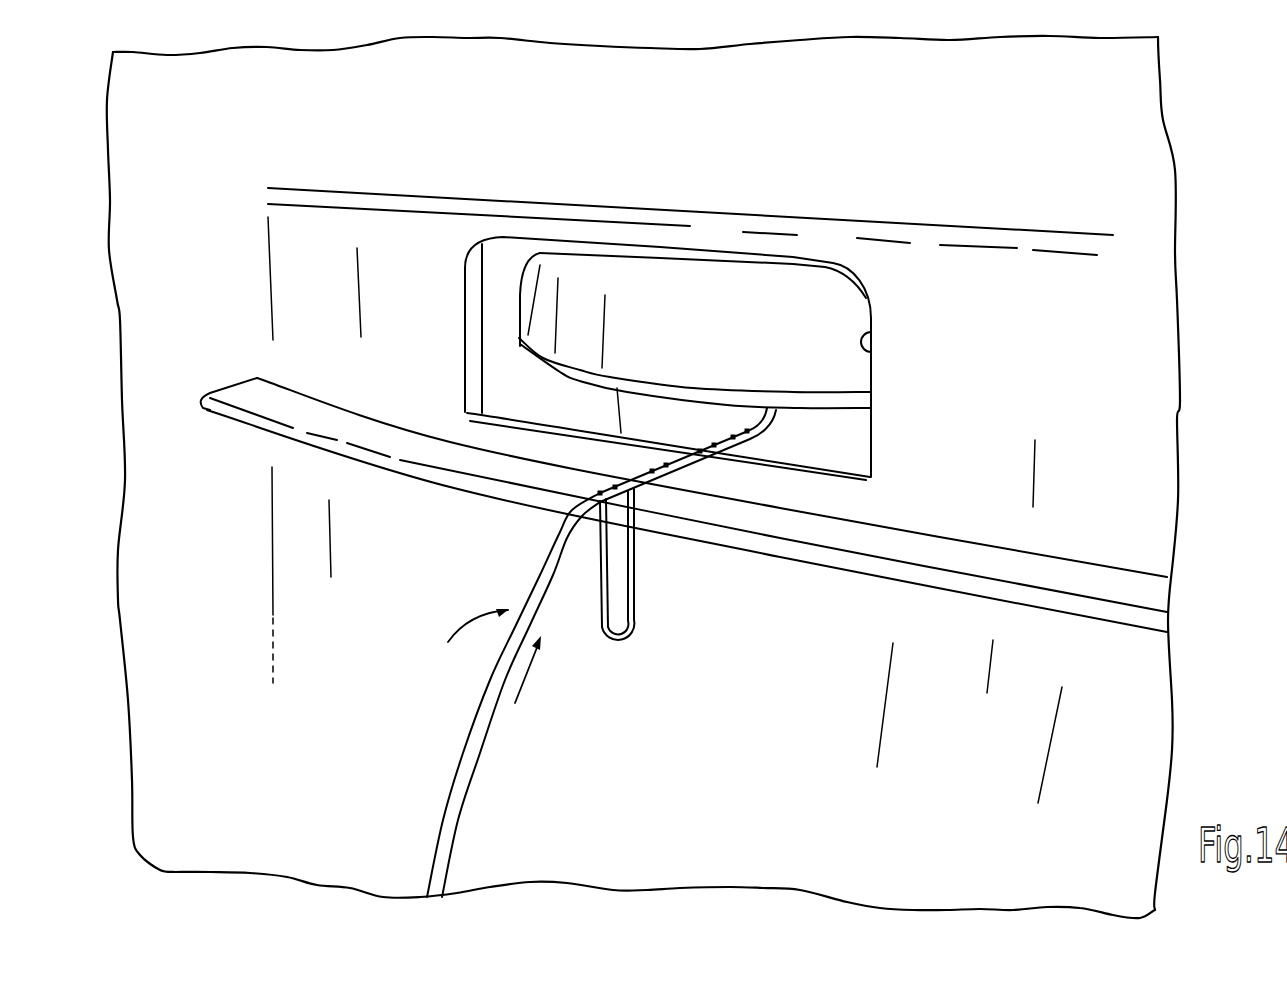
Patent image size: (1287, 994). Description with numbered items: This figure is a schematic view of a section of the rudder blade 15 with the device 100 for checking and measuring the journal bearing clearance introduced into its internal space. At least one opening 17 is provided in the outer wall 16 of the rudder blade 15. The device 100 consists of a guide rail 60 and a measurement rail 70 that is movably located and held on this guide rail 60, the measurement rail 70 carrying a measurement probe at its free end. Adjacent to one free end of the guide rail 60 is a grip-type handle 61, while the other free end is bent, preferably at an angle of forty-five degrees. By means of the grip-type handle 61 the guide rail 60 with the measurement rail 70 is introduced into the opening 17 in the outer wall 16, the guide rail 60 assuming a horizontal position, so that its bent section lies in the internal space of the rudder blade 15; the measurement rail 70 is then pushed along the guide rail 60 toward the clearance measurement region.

The rudder blade 15 is at (822, 167).
The outer wall 16 is at (870, 350).
The opening 17 is at (567, 419).
The guide rail 60 is at (688, 465).
The grip-type handle 61 is at (636, 598).
The measurement rail 70 is at (475, 785).
The device 100 is at (459, 643).